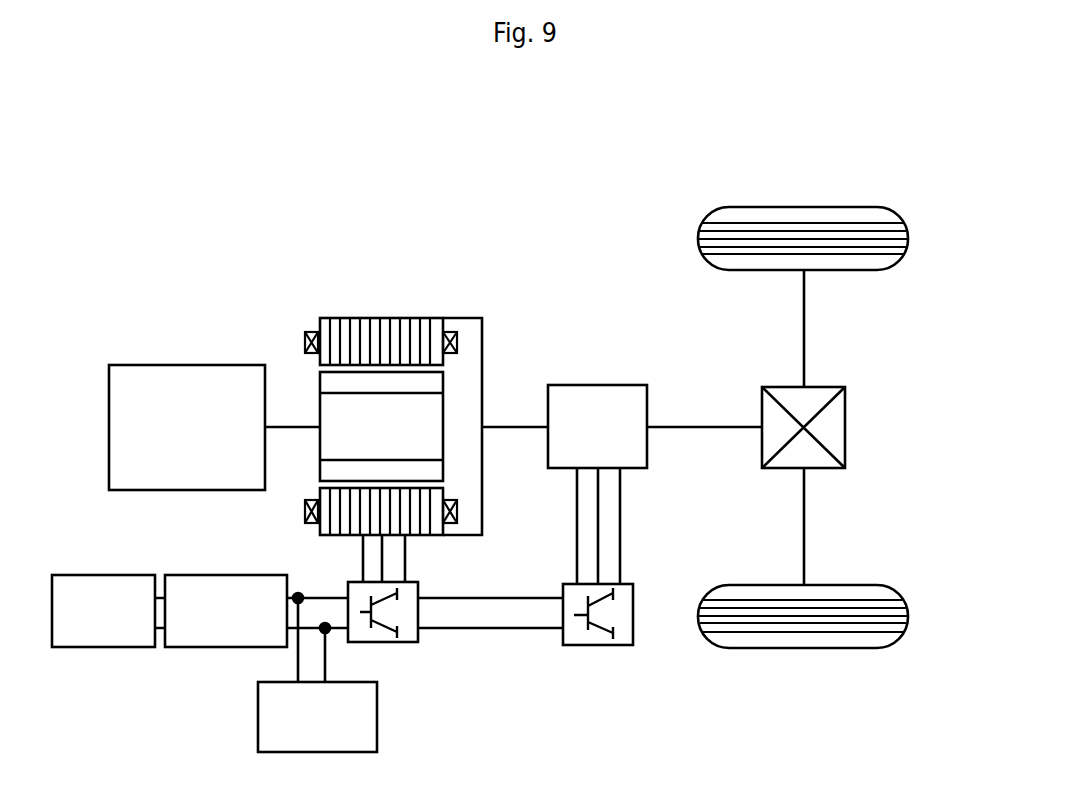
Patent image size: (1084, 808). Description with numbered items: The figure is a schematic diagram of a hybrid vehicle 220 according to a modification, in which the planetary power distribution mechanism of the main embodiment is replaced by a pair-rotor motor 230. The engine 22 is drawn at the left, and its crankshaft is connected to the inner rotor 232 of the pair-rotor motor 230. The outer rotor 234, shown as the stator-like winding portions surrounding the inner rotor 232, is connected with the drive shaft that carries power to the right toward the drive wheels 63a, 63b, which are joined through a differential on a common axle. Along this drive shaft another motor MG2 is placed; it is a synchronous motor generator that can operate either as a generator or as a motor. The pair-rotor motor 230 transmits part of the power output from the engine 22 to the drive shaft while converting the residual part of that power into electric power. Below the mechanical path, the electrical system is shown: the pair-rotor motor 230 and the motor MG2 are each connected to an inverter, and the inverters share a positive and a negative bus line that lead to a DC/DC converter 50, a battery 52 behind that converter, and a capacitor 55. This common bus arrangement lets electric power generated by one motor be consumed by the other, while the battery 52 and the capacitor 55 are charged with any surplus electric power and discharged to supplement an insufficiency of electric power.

The hybrid vehicle 220 is at (552, 184).
The engine 22 is at (184, 365).
The pair-rotor motor 230 is at (387, 195).
The inner rotor 232 is at (320, 407).
The outer rotor 234 is at (382, 318).
The motor MG2 is at (597, 385).
The drive wheel 63a is at (803, 207).
The drive wheel 63b is at (804, 648).
The battery 52 is at (112, 647).
The DC/DC converter 50 is at (222, 647).
The capacitor 55 is at (377, 713).